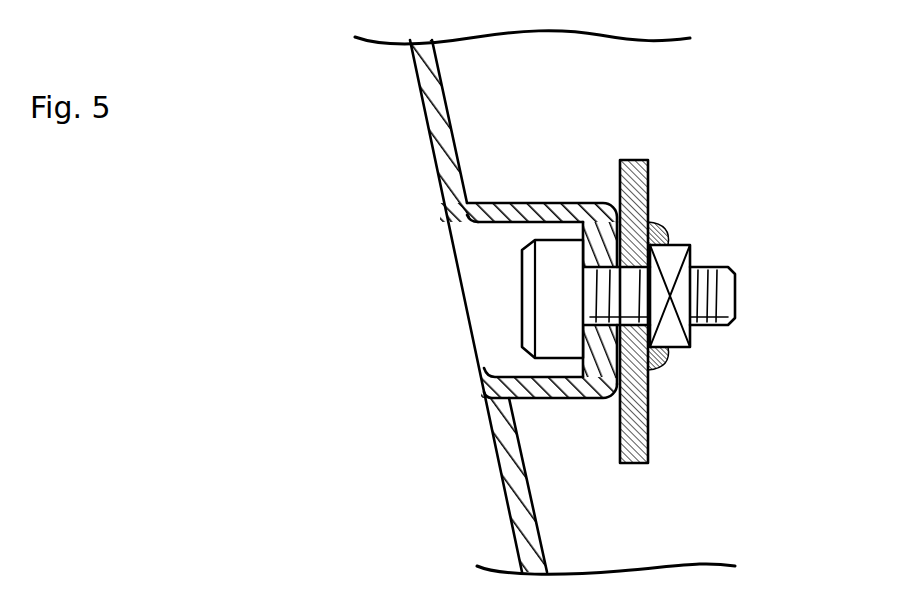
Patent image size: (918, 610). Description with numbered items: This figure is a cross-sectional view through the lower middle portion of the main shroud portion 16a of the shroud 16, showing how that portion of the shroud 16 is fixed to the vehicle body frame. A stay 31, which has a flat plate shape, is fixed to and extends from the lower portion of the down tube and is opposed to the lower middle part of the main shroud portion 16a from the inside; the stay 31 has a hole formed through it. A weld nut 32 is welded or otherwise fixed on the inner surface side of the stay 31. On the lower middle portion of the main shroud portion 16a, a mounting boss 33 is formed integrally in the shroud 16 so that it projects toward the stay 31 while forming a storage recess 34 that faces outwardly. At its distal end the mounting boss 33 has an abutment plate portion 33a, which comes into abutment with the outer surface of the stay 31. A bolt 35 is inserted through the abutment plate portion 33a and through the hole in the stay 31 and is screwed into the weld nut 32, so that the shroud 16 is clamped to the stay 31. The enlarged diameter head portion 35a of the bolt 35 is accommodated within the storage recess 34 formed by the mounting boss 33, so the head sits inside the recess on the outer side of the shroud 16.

The shroud 16 is at (410, 128).
The main shroud portion 16a is at (497, 468).
The stay 31 is at (648, 172).
The weld nut 32 is at (672, 333).
The mounting boss 33 is at (531, 203).
The abutment plate portion 33a is at (650, 210).
The storage recess 34 is at (495, 223).
The bolt 35 is at (737, 305).
The enlarged diameter head portion 35a is at (520, 320).